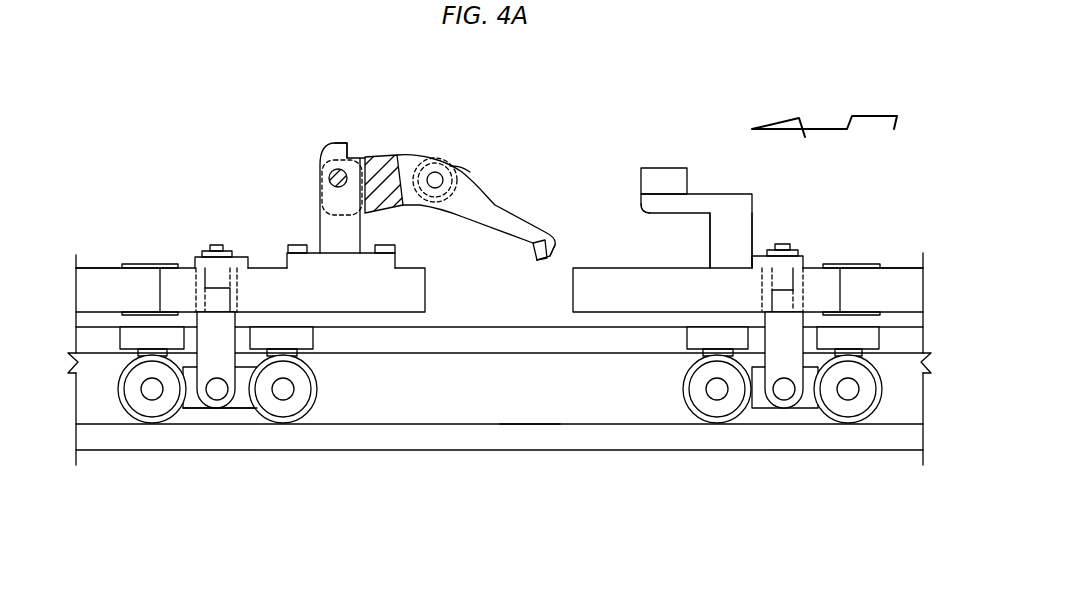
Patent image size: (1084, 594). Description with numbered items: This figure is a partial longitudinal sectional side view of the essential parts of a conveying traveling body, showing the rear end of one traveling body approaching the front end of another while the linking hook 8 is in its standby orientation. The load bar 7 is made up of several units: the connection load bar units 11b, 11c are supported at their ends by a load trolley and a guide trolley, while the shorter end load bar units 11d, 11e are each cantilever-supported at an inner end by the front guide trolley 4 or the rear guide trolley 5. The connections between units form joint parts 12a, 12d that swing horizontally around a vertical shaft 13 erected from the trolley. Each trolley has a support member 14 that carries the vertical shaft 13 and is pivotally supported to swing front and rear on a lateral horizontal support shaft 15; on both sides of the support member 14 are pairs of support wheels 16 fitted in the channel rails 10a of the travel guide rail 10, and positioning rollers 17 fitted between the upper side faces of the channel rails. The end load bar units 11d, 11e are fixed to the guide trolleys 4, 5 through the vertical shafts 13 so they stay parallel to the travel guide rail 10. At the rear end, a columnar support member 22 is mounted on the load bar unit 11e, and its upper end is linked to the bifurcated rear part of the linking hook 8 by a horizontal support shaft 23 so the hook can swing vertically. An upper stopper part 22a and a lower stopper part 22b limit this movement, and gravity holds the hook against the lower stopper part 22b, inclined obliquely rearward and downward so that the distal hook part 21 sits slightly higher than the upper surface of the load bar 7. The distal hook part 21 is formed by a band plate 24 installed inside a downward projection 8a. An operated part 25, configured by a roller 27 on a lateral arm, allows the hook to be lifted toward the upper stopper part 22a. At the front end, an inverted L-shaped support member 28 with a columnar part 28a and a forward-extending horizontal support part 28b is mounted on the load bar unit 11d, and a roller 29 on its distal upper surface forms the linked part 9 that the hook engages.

The front guide trolley 4 is at (757, 416).
The rear guide trolley 5 is at (201, 416).
The load bar 7 is at (98, 261).
The linking hook 8 is at (492, 203).
The downward projection 8a is at (556, 247).
The linked part 9 is at (682, 160).
The travel guide rail 10 is at (470, 458).
The channel rail 10a is at (527, 403).
The connection load bar unit 11b is at (900, 295).
The connection load bar unit 11c is at (110, 283).
The end load bar unit 11d is at (612, 300).
The end load bar unit 11e is at (372, 300).
The joint part 12a is at (812, 290).
The joint part 12d is at (242, 298).
The vertical shaft 13 is at (220, 245).
The support member 14 is at (218, 340).
The horizontal support shaft 15 is at (217, 393).
The support wheel 16 is at (152, 423).
The positioning roller 17 is at (135, 337).
The distal hook part 21 is at (539, 270).
The columnar support member 22 is at (338, 230).
The upper stopper part 22a is at (366, 152).
The lower stopper part 22b is at (378, 211).
The horizontal support shaft 23 is at (332, 176).
The band plate 24 is at (532, 252).
The operated part 25 is at (437, 158).
The roller 27 is at (450, 168).
The inverted L-shaped support member 28 is at (744, 188).
The columnar part 28a is at (725, 240).
The horizontal support part 28b is at (658, 205).
The roller 29 is at (660, 175).